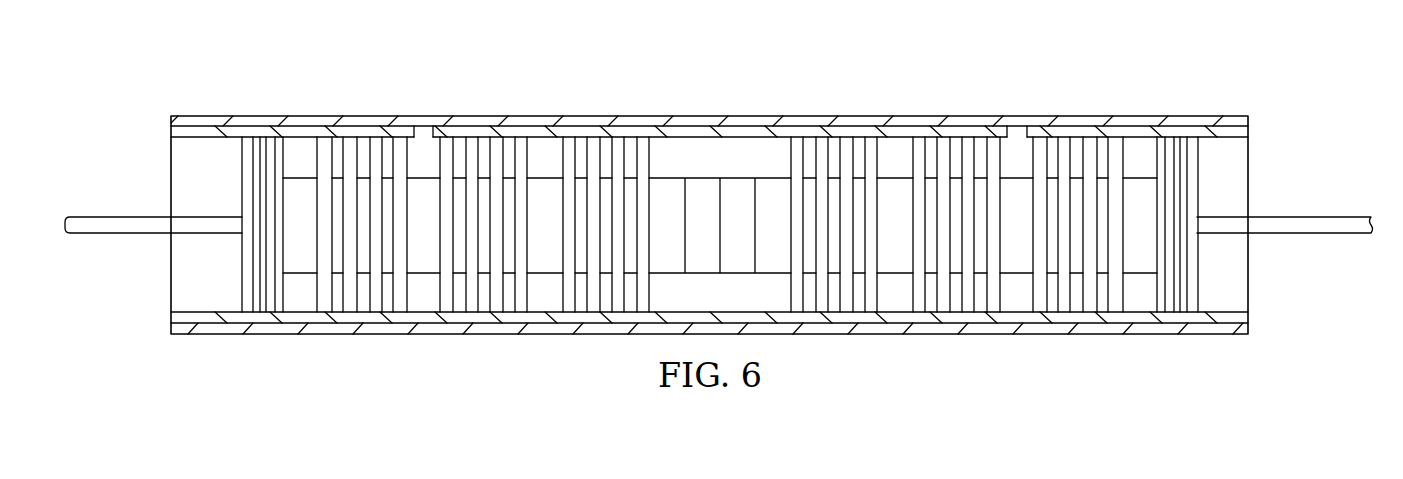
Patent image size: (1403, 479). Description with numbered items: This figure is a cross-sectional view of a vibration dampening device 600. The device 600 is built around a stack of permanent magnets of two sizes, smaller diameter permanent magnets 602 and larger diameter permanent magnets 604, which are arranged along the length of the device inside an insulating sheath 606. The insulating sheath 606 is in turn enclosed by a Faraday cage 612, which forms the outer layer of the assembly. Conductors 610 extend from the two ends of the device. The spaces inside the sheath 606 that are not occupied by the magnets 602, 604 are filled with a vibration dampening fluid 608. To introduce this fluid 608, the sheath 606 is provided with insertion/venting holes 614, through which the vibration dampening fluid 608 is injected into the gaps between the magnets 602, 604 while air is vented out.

The vibration dampening device 600 is at (697, 82).
The smaller diameter permanent magnets 602 is at (902, 183).
The larger diameter permanent magnets 604 is at (847, 143).
The insulating sheath 606 is at (752, 130).
The vibration dampening fluid 608 is at (537, 147).
The conductors 610 is at (1300, 223).
The Faraday cage 612 is at (1133, 122).
The insertion/venting holes 614 is at (424, 130).